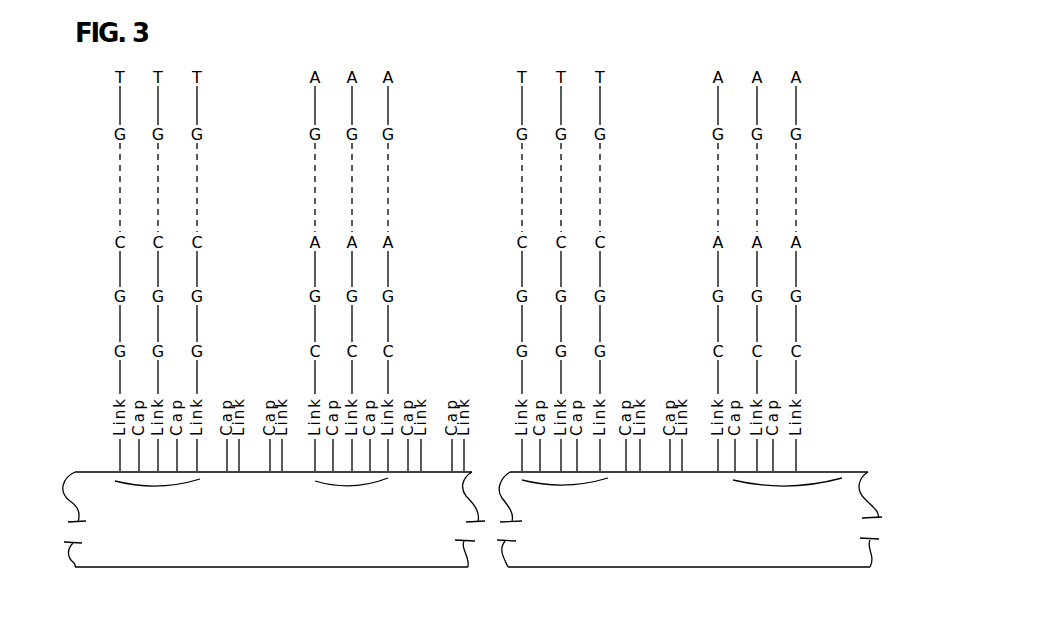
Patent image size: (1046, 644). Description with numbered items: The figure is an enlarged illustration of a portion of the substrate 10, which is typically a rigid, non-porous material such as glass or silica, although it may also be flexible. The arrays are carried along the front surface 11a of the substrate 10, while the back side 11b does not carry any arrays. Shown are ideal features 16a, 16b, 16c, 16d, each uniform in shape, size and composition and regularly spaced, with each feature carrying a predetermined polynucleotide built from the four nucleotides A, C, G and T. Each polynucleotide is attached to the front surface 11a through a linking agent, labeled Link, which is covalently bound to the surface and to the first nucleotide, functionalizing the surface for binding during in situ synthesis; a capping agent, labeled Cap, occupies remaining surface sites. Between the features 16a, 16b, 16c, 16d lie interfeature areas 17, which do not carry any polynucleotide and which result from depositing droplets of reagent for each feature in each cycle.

The substrate 10 is at (453, 517).
The front surface 11a is at (97, 470).
The back side 11b is at (135, 570).
The feature 16a is at (160, 490).
The feature 16b is at (362, 490).
The feature 16c is at (558, 490).
The feature 16d is at (777, 490).
The interfeature area 17 is at (258, 478).